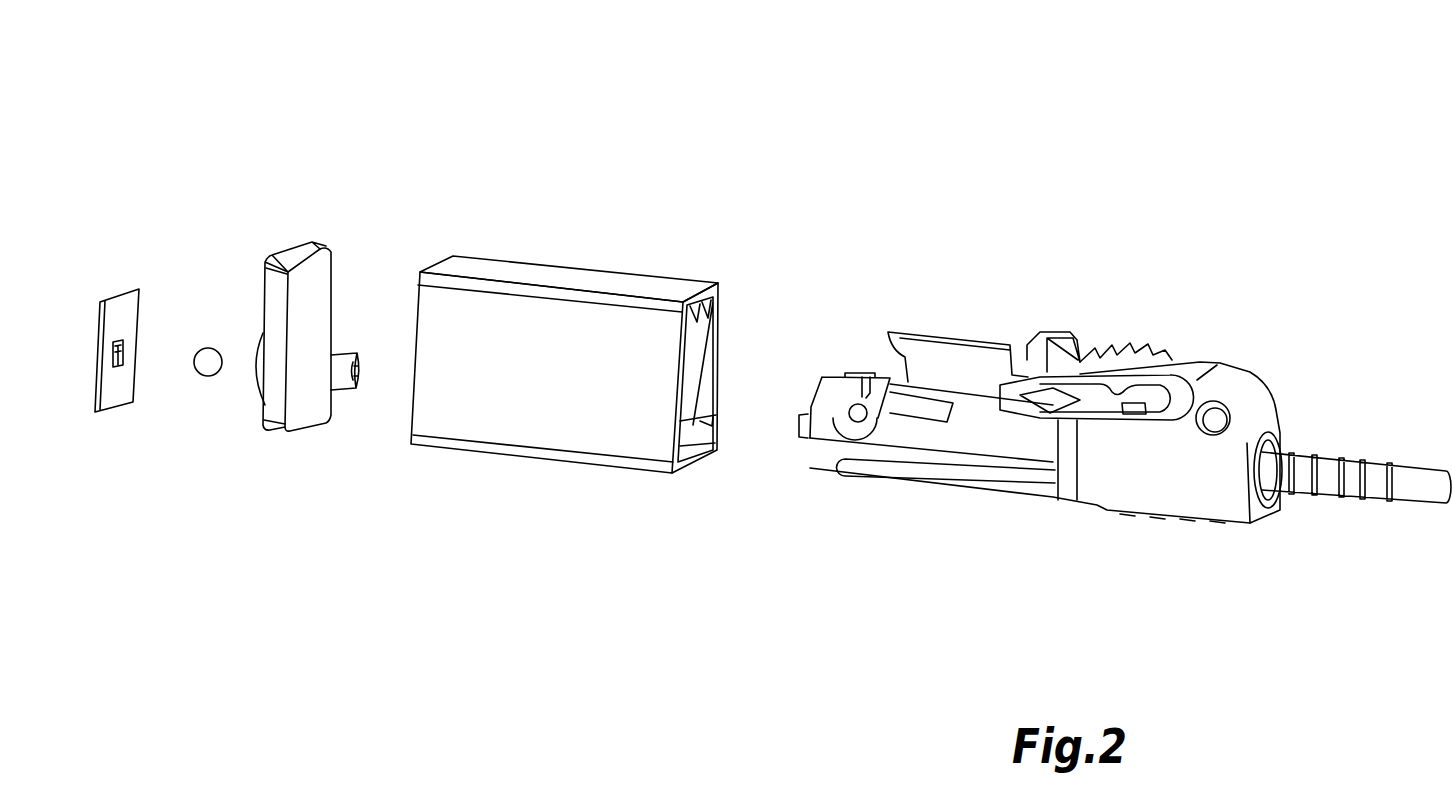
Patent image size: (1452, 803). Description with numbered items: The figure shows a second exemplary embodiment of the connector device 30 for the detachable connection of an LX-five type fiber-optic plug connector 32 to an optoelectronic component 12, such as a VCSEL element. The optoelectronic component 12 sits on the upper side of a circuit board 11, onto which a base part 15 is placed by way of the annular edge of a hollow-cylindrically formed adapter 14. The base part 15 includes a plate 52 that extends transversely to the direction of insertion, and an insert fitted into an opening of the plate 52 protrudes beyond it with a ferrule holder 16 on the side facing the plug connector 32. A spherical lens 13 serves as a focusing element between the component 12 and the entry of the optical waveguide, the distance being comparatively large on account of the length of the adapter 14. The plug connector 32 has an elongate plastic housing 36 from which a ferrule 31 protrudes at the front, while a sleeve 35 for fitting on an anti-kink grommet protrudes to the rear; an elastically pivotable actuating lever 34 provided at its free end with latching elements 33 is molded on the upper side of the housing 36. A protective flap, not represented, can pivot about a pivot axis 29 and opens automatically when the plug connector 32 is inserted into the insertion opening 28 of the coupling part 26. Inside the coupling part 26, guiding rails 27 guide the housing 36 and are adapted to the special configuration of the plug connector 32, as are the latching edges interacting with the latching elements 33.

The circuit board 11 is at (127, 307).
The optoelectronic component 12 is at (121, 367).
The spherical lens 13 is at (212, 377).
The adapter 14 is at (257, 350).
The base part 15 is at (313, 220).
The ferrule holder 16 is at (332, 377).
The coupling part 26 is at (562, 310).
The guiding rails 27 is at (720, 403).
The insertion opening 28 is at (693, 443).
The pivot axis 29 is at (860, 397).
The connector device 30 is at (560, 580).
The ferrule 31 is at (807, 417).
The fiber-optic plug connector 32 is at (1033, 262).
The latching elements 33 is at (1025, 348).
The actuating lever 34 is at (1128, 343).
The sleeve 35 is at (1415, 488).
The housing 36 is at (1100, 467).
The plate 52 is at (325, 272).